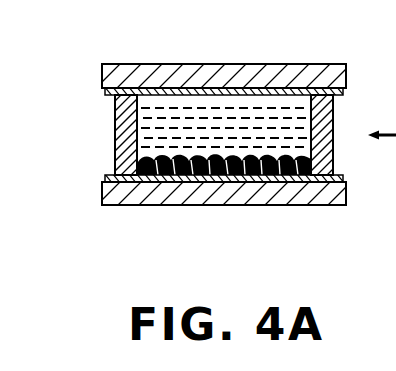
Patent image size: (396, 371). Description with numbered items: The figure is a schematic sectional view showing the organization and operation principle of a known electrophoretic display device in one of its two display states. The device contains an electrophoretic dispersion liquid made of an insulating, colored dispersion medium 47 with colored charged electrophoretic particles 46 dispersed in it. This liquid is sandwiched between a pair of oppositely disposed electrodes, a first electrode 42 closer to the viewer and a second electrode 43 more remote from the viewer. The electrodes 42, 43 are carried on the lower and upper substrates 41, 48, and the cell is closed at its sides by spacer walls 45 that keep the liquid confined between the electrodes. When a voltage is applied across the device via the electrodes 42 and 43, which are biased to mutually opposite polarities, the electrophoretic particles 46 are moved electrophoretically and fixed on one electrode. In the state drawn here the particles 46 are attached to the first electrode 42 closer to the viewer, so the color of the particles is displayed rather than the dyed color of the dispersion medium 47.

The lower substrate 41 is at (224, 197).
The first electrode 42 is at (103, 176).
The second electrode 43 is at (103, 92).
The spacer wall 45 is at (116, 117).
The electrophoretic particles 46 is at (142, 161).
The colored dispersion medium 47 is at (150, 138).
The upper substrate 48 is at (228, 78).